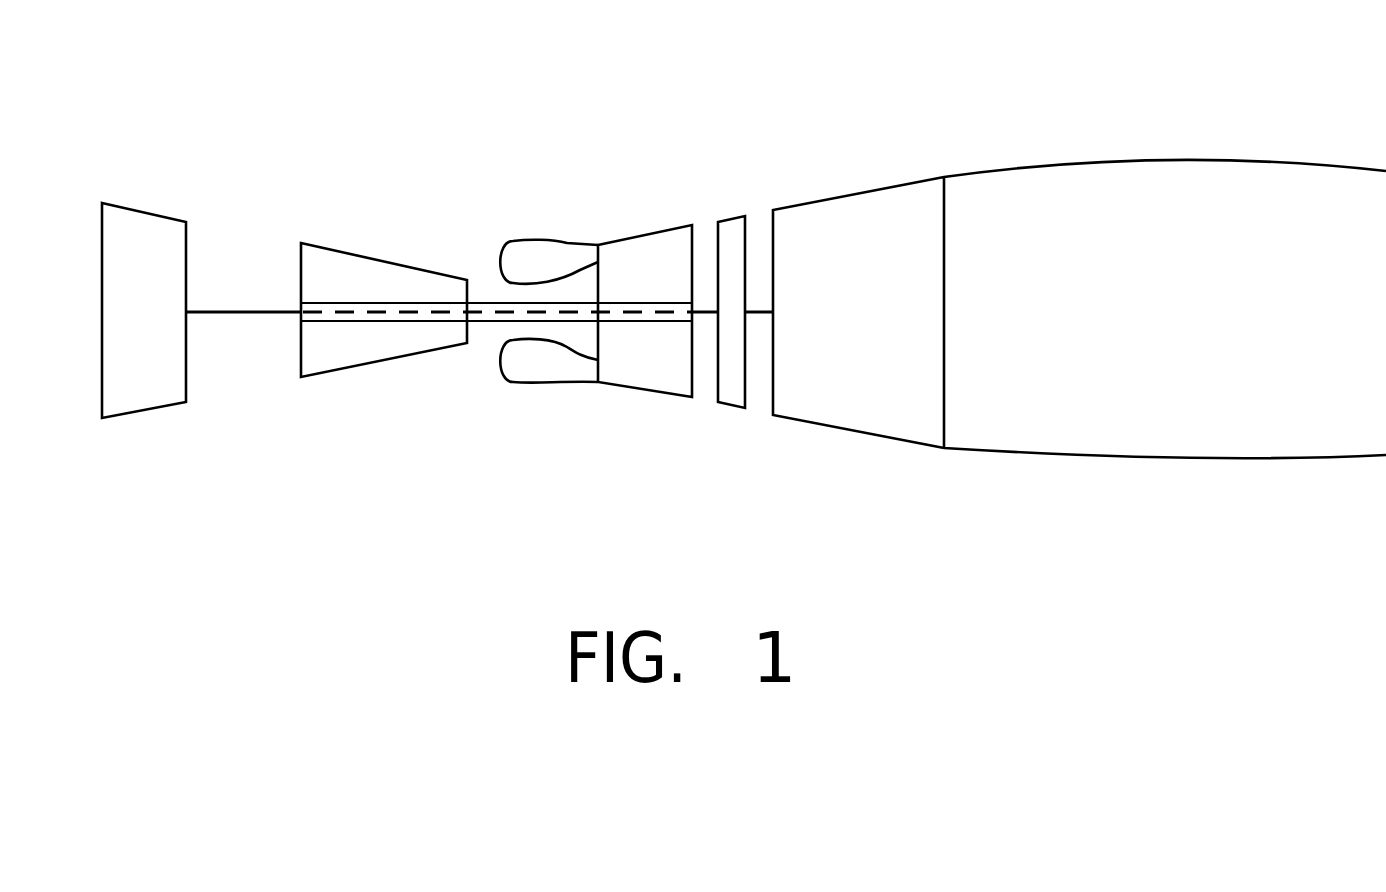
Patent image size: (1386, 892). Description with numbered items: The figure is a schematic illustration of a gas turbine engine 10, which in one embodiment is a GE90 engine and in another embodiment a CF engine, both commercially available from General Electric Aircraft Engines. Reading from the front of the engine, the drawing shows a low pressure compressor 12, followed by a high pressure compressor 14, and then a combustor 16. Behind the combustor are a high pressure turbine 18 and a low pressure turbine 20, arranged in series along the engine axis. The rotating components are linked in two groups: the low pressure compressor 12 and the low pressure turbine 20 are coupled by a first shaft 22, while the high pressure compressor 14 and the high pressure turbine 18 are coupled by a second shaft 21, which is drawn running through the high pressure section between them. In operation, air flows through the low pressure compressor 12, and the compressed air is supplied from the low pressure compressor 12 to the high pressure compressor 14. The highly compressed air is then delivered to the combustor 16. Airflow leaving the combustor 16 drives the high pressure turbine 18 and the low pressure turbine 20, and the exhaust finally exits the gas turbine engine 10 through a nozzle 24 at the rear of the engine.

The gas turbine engine 10 is at (1192, 86).
The low pressure compressor 12 is at (166, 408).
The high pressure compressor 14 is at (432, 351).
The combustor 16 is at (537, 382).
The high pressure turbine 18 is at (660, 396).
The low pressure turbine 20 is at (727, 405).
The second shaft 21 is at (485, 302).
The first shaft 22 is at (215, 309).
The nozzle 24 is at (1107, 460).